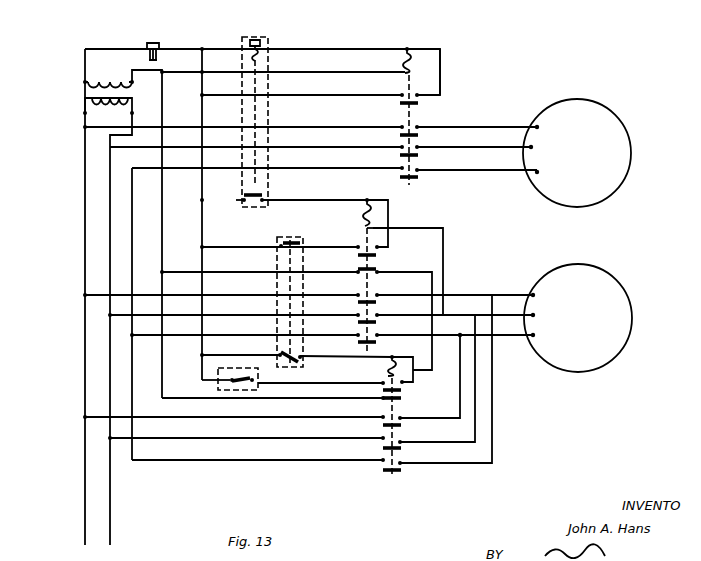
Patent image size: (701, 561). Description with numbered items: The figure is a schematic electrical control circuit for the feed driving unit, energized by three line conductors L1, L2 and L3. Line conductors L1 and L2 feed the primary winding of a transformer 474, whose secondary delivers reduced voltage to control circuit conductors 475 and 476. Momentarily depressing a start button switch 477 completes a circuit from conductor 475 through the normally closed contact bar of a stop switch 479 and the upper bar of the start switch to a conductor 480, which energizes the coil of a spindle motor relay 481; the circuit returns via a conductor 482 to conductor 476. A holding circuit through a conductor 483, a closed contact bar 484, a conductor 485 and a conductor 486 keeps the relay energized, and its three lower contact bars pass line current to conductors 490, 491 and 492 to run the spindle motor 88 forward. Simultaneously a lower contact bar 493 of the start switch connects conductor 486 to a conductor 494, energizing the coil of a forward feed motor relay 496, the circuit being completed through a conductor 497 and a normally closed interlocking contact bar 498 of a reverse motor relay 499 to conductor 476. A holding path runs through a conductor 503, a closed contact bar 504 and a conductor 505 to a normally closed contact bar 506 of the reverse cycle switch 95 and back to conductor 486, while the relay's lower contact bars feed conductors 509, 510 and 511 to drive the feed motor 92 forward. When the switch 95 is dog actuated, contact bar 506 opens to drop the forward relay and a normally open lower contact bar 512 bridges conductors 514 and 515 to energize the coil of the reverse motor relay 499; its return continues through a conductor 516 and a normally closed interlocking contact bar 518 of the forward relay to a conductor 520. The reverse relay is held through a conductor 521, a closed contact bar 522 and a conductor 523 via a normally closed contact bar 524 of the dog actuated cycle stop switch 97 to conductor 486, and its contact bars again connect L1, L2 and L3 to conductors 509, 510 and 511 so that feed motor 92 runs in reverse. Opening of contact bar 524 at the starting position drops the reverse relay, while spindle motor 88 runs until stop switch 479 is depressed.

The line conductor L1 is at (85, 230).
The line conductor L2 is at (110, 206).
The line conductor L3 is at (132, 242).
The transformer 474 is at (83, 100).
The control circuit conductor 475 is at (85, 65).
The control circuit conductor 476 is at (132, 71).
The start button switch 477 is at (275, 46).
The stop switch 479 is at (158, 43).
The conductor 480 is at (353, 55).
The spindle motor relay 481 is at (415, 53).
The conductor 482 is at (340, 74).
The conductor 483 is at (440, 72).
The contact bar 484 is at (419, 103).
The conductor 485 is at (302, 97).
The conductor 486 is at (202, 104).
The spindle motor 88 is at (597, 112).
The conductor 490 is at (480, 127).
The conductor 491 is at (456, 147).
The conductor 492 is at (482, 171).
The lower contact bar 493 is at (265, 196).
The conductor 494 is at (340, 200).
The forward feed motor relay 496 is at (355, 218).
The conductor 503 is at (391, 220).
The conductor 497 is at (445, 255).
The contact bar 504 is at (380, 254).
The conductor 505 is at (320, 251).
The normally closed contact bar 506 is at (288, 241).
The reverse cycle switch 95 is at (270, 258).
The conductor 520 is at (242, 283).
The interlocking contact bar 518 is at (364, 276).
The conductor 516 is at (416, 276).
The conductor 510 is at (422, 313).
The conductor 509 is at (486, 294).
The conductor 511 is at (460, 334).
The feed motor 92 is at (594, 368).
The conductor 514 is at (206, 355).
The normally open lower contact bar 512 is at (298, 362).
The conductor 515 is at (308, 355).
The reverse motor relay 499 is at (407, 347).
The conductor 521 is at (403, 383).
The interlocking contact bar 498 is at (398, 399).
The contact bar 522 is at (378, 394).
The conductor 523 is at (291, 392).
The normally closed contact bar 524 is at (225, 379).
The cycle stop switch 97 is at (254, 396).